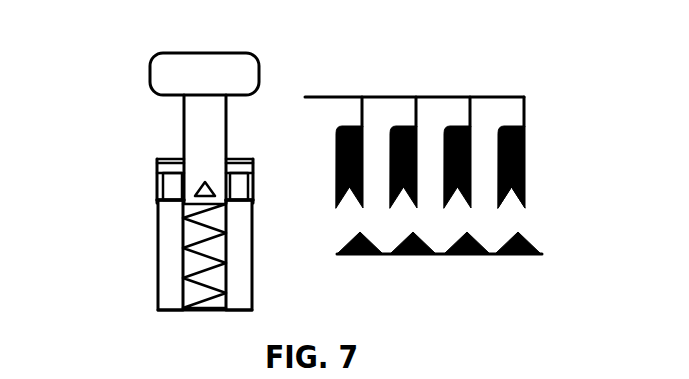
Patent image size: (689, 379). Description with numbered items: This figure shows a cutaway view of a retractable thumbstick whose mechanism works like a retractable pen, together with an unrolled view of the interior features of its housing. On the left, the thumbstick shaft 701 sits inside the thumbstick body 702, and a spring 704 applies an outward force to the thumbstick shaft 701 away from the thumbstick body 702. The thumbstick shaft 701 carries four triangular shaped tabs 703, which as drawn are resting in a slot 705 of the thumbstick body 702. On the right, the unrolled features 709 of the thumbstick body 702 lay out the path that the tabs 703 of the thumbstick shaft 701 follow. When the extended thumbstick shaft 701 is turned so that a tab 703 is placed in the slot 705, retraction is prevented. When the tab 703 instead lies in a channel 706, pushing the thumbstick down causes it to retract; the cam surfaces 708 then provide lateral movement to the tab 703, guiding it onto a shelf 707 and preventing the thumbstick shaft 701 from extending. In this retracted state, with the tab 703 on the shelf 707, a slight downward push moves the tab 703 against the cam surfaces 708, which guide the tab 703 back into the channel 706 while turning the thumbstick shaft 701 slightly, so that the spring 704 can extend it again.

The thumbstick shaft 701 is at (183, 99).
The thumbstick body 702 is at (157, 263).
The tab 703 is at (158, 177).
The spring 704 is at (183, 311).
The slot 705 is at (253, 160).
The channel 706 is at (483, 120).
The shelf 707 is at (512, 190).
The cam surfaces 708 is at (530, 255).
The unrolled features 709 is at (333, 97).